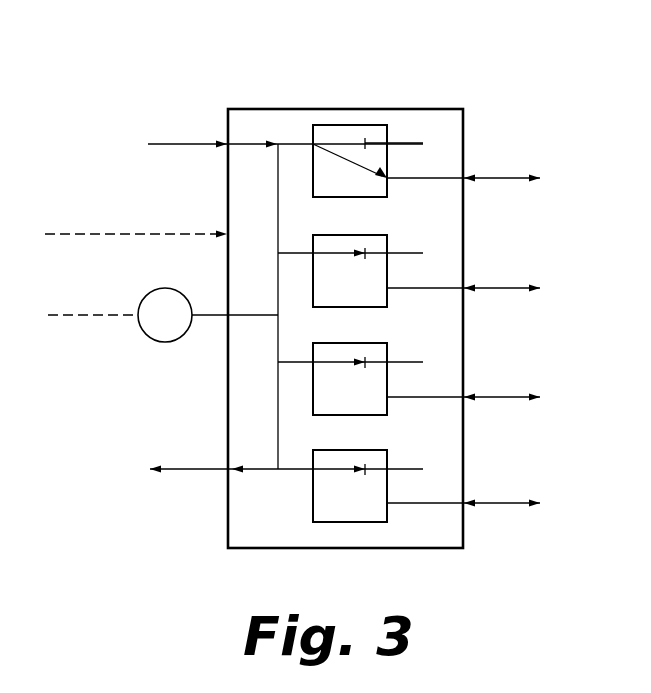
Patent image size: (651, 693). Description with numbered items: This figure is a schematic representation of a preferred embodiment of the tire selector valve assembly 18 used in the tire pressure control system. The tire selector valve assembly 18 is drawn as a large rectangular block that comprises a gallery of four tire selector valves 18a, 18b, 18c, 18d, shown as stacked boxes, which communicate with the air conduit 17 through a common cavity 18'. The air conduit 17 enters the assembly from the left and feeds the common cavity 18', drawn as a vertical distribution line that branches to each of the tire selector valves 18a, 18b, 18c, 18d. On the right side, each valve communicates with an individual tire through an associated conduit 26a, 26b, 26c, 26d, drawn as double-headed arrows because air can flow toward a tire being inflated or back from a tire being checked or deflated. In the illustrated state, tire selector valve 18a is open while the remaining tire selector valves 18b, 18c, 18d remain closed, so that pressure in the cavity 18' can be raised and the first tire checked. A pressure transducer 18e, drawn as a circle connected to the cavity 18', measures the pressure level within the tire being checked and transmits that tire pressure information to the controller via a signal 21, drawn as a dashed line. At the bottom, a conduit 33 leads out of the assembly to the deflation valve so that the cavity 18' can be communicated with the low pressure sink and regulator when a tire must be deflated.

The air conduit 17 is at (186, 143).
The tire selector valve assembly 18 is at (345, 290).
The common cavity 18' is at (259, 306).
The tire selector valve 18a is at (363, 197).
The tire selector valve 18b is at (363, 307).
The tire selector valve 18c is at (363, 415).
The tire selector valve 18d is at (363, 522).
The pressure transducer 18e is at (158, 342).
The signal 21 is at (85, 313).
The conduit 26a is at (508, 177).
The conduit 26b is at (508, 287).
The conduit 26c is at (508, 396).
The conduit 26d is at (508, 502).
The conduit 33 is at (188, 469).